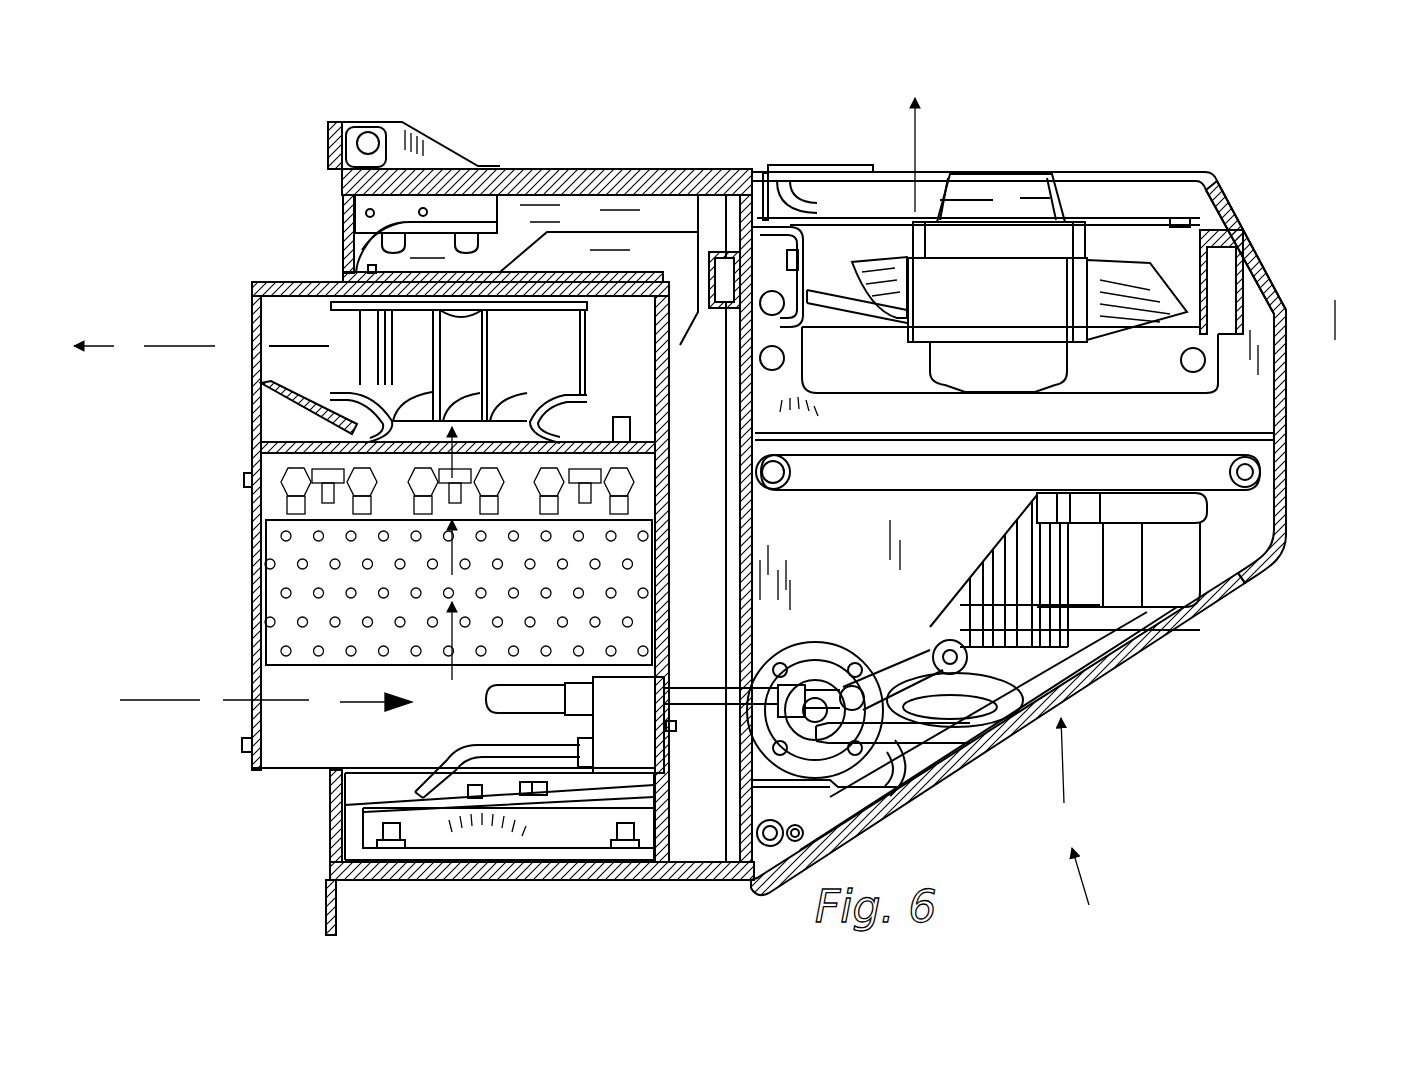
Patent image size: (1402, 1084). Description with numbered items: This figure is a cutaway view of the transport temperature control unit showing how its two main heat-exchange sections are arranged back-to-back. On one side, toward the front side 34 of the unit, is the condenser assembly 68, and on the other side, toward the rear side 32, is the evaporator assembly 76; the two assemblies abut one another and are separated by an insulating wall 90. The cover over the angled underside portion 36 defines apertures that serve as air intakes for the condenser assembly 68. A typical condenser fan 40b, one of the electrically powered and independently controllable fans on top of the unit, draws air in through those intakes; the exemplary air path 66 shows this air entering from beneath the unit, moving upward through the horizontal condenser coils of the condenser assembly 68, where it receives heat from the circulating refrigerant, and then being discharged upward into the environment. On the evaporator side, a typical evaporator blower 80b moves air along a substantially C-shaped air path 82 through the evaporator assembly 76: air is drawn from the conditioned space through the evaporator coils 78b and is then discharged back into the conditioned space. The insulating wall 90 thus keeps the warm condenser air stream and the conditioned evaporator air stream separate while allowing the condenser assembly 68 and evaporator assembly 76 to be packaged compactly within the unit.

The rear side 32 is at (214, 505).
The front side 34 is at (1316, 392).
The angled underside portion 36 is at (1219, 670).
The condenser fan 40b is at (1030, 182).
The air path 66 is at (916, 166).
The condenser assembly 68 is at (1222, 150).
The evaporator assembly 76 is at (528, 150).
The evaporator coils 78b is at (272, 600).
The evaporator blower 80b is at (587, 378).
The C-shaped air path 82 is at (204, 343).
The insulating wall 90 is at (708, 559).